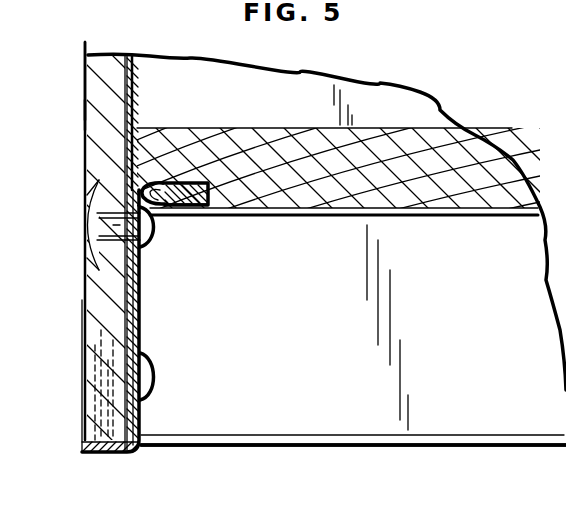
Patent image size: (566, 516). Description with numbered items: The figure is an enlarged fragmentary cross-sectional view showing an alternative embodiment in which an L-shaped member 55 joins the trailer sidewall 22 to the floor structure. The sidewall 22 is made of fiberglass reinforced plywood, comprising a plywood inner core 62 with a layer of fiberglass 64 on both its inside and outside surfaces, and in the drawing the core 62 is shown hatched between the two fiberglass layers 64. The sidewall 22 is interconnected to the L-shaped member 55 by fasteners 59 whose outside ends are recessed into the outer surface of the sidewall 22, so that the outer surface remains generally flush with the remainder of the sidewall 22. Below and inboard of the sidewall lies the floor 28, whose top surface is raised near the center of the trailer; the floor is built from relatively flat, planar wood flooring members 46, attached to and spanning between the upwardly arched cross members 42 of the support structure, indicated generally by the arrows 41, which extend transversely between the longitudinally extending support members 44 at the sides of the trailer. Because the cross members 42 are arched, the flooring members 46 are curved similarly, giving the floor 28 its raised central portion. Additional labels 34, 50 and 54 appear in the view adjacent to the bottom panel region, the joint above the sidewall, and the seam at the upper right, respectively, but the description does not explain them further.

The sidewall 22 is at (86, 60).
The floor 28 is at (374, 122).
The bottom panel 34 is at (455, 445).
The arrows 41 is at (13, 19).
The cross member 42 is at (347, 416).
The support member 44 is at (508, 33).
The flooring member 46 is at (258, 156).
The joint 50 is at (514, 48).
The seam 54 is at (504, 0).
The L-shaped member 55 is at (142, 318).
The fastener 59 is at (152, 233).
The plywood inner core 62 is at (105, 87).
The layer of fiberglass 64 is at (135, 105).